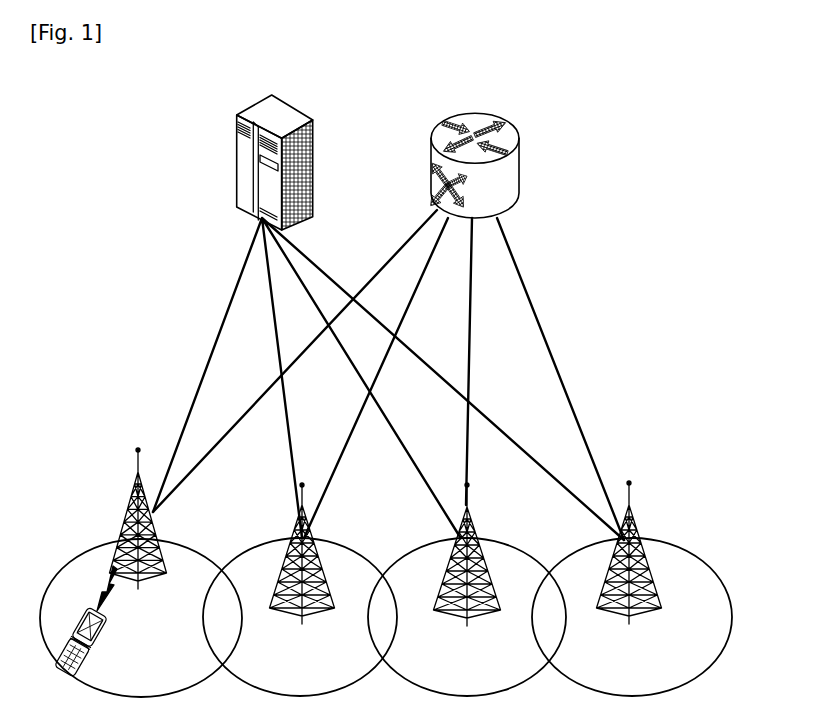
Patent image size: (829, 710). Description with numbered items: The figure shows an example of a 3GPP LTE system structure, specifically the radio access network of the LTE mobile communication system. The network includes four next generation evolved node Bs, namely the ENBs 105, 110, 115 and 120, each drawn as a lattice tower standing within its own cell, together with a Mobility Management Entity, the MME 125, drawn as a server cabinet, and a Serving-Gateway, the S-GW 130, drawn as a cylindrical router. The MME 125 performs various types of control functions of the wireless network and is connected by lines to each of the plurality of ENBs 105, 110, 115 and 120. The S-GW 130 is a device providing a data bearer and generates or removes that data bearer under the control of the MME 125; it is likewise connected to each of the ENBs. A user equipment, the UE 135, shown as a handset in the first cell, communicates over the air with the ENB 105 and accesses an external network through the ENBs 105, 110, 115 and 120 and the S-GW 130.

The evolved node B 105 is at (127, 502).
The evolved node B 110 is at (295, 523).
The evolved node B 115 is at (473, 522).
The evolved node B 120 is at (637, 522).
The mobility management entity 125 is at (262, 112).
The serving gateway 130 is at (470, 117).
The user equipment 135 is at (98, 637).